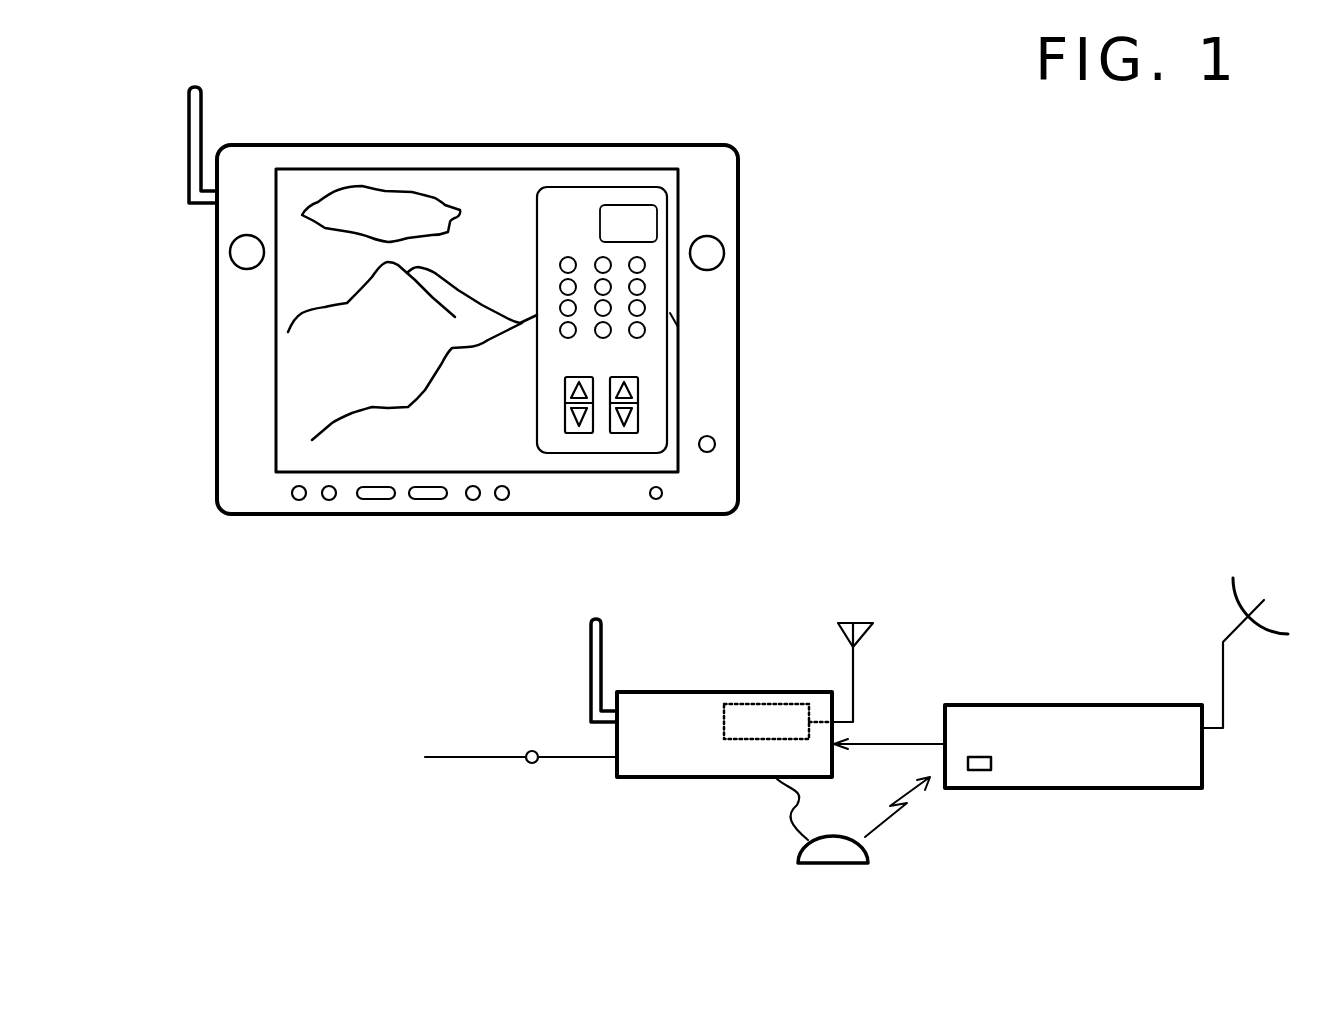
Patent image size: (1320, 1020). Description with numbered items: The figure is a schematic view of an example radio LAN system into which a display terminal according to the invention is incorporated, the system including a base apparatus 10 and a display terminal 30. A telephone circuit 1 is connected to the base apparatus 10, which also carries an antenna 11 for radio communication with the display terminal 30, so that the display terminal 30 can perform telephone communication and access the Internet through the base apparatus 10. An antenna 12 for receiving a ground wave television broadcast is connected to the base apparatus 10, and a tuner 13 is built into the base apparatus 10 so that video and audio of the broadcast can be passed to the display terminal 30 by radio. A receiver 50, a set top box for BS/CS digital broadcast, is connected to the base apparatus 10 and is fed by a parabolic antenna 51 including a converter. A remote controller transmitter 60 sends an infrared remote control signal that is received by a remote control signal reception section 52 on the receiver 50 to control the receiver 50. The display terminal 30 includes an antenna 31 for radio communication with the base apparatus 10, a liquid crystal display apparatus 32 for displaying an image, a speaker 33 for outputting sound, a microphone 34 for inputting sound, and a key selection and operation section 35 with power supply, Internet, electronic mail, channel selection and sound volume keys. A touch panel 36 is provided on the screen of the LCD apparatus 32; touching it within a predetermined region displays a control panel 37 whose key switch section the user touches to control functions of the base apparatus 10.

The telephone circuit 1 is at (453, 757).
The base apparatus 10 is at (665, 779).
The antenna 11 is at (590, 642).
The antenna 12 is at (855, 623).
The tuner 13 is at (743, 703).
The display terminal 30 is at (768, 167).
The antenna 31 is at (203, 112).
The liquid crystal display (LCD) apparatus 32 is at (495, 169).
The speaker 33 is at (230, 252).
The microphone 34 is at (716, 444).
The key selection and operation section 35 is at (330, 500).
The touch panel 36 is at (287, 402).
The control panel 37 is at (627, 455).
The receiver (set top box) 50 is at (1017, 703).
The parabolic antenna 51 is at (1233, 597).
The remote control signal reception section 52 is at (985, 771).
The remote controller transmitter 60 is at (825, 865).